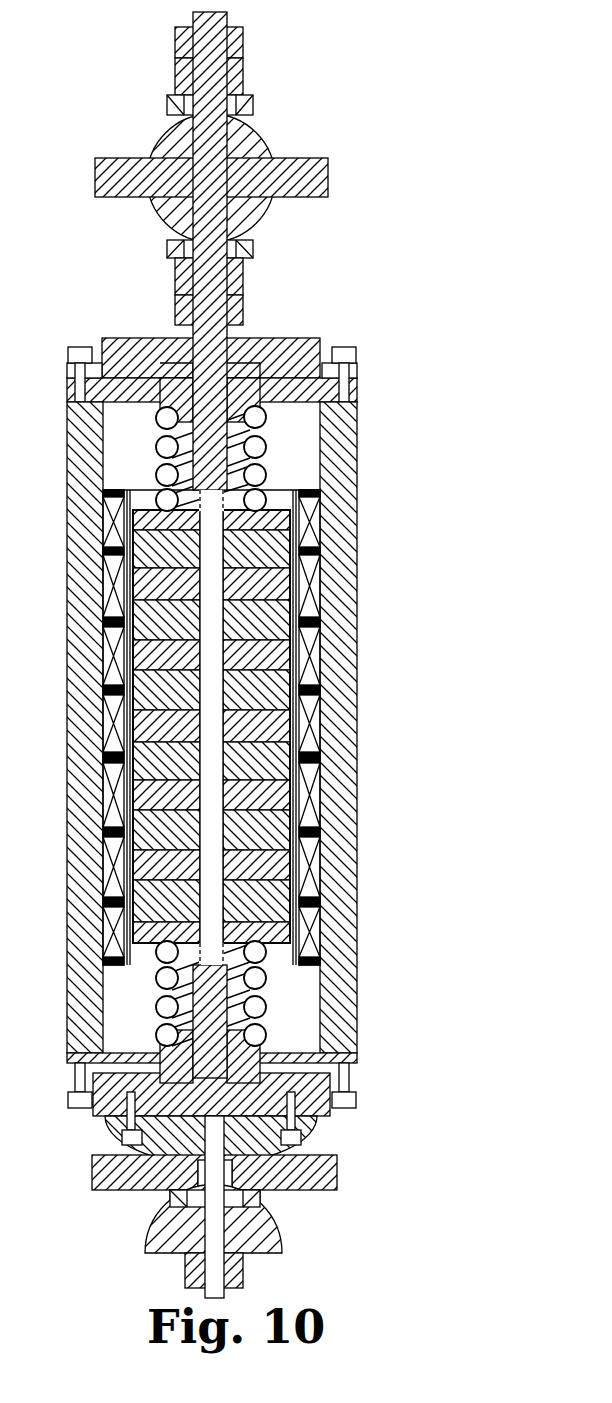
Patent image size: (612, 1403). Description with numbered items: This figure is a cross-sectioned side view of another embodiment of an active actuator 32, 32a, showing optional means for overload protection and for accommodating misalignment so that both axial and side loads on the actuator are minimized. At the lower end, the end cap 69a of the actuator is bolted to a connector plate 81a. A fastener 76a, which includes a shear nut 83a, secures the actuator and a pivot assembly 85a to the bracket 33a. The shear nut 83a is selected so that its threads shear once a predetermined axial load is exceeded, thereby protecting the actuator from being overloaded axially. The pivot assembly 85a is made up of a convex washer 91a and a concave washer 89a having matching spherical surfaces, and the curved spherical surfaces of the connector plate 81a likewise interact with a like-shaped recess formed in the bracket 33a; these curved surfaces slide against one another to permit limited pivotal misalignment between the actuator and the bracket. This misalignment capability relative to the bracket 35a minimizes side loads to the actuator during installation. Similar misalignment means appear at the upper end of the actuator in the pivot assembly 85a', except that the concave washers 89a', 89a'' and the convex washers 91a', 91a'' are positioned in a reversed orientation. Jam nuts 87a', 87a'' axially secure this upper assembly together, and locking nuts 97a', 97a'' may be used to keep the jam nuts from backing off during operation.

The actuator 32 is at (278, 694).
The actuator 32a is at (362, 332).
The locking nut 97a' is at (264, 37).
The jam nut 87a' is at (278, 73).
The concave washer 89a' is at (279, 102).
The pivot assembly 85a' is at (311, 168).
The convex washer 91a' is at (271, 146).
The bracket 35a is at (330, 172).
The convex washer 91a'' is at (275, 210).
The concave washer 89a'' is at (273, 250).
The jam nut 87a'' is at (268, 277).
The locking nut 97a'' is at (264, 311).
The end cap 69a is at (303, 1113).
The connector plate 81a is at (315, 1125).
The bracket 33a is at (338, 1162).
The fastener 76a is at (175, 1192).
The concave washer 89a is at (284, 1203).
The pivot assembly 85a is at (300, 1230).
The convex washer 91a is at (275, 1222).
The shear nut 83a is at (245, 1272).